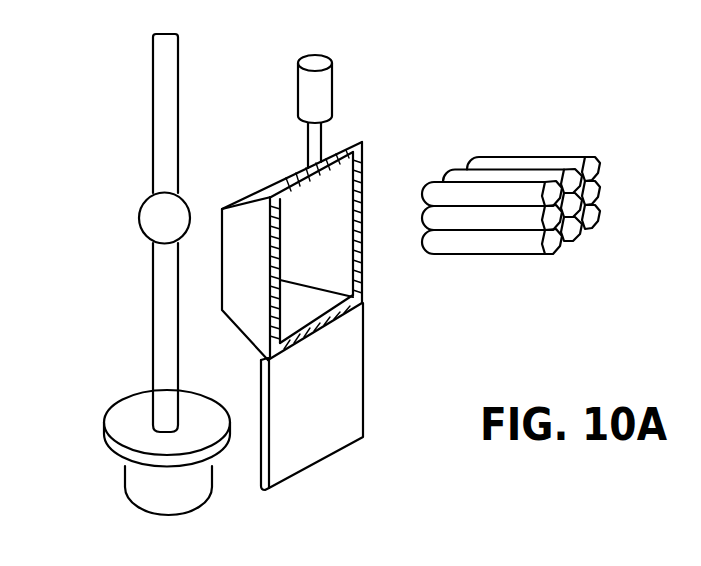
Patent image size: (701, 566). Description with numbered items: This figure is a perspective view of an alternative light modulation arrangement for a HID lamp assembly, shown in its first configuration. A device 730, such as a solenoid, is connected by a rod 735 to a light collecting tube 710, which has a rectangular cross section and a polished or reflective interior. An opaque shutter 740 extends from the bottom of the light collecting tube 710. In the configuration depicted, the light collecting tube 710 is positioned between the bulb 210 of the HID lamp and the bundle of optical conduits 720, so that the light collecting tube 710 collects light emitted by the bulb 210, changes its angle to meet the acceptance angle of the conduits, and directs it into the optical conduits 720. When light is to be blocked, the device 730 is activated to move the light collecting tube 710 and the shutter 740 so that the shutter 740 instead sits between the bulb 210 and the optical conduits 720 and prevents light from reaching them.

The bulb 210 is at (138, 210).
The light collecting tube 710 is at (269, 186).
The optical conduits 720 is at (513, 167).
The device 730 is at (307, 91).
The rod 735 is at (312, 142).
The shutter 740 is at (312, 460).